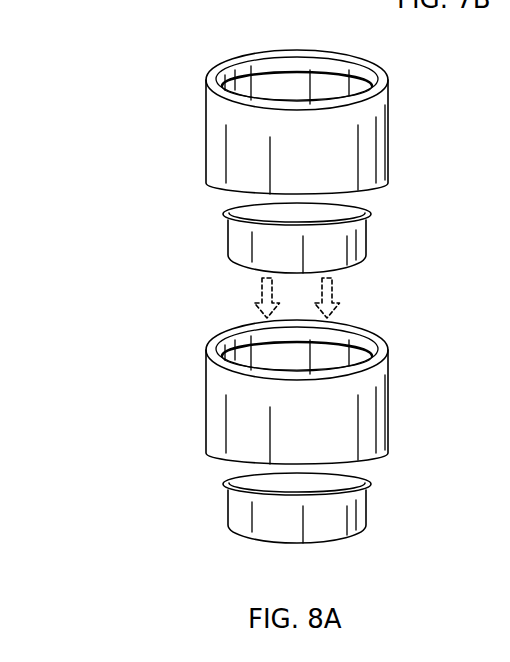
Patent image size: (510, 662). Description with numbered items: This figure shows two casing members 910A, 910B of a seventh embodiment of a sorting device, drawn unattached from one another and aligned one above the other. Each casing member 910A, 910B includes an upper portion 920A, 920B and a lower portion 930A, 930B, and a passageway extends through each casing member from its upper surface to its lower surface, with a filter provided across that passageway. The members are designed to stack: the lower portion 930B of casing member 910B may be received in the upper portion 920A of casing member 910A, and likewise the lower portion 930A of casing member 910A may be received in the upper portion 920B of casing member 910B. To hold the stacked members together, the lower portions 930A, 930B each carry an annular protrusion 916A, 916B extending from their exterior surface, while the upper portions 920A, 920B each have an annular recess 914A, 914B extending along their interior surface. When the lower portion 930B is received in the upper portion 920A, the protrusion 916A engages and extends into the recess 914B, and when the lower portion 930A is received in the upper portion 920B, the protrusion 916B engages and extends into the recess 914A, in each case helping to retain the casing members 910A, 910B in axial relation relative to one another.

The casing member 910A is at (262, 423).
The casing member 910B is at (114, 137).
The annular recess 914A is at (327, 342).
The annular recess 914B is at (270, 74).
The annular protrusion 916A is at (354, 482).
The annular protrusion 916B is at (373, 205).
The upper portion 920A is at (340, 407).
The upper portion 920B is at (379, 137).
The lower portion 930A is at (344, 516).
The lower portion 930B is at (359, 239).